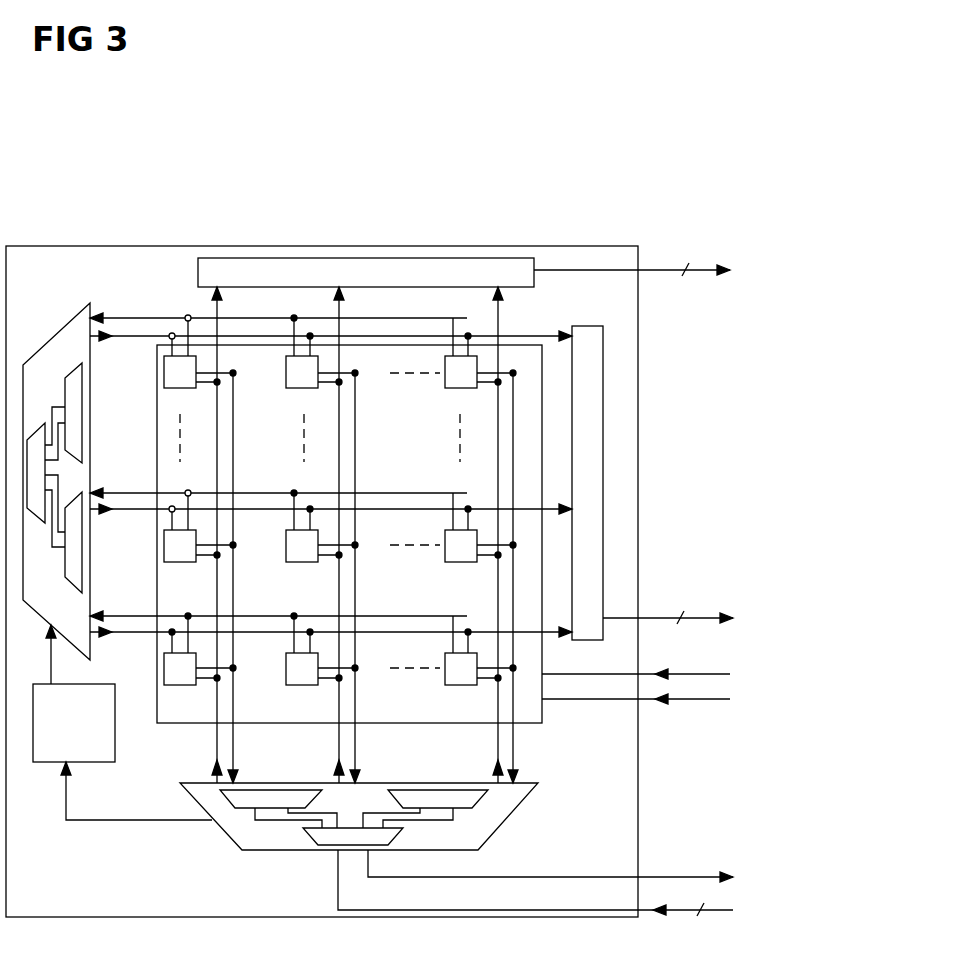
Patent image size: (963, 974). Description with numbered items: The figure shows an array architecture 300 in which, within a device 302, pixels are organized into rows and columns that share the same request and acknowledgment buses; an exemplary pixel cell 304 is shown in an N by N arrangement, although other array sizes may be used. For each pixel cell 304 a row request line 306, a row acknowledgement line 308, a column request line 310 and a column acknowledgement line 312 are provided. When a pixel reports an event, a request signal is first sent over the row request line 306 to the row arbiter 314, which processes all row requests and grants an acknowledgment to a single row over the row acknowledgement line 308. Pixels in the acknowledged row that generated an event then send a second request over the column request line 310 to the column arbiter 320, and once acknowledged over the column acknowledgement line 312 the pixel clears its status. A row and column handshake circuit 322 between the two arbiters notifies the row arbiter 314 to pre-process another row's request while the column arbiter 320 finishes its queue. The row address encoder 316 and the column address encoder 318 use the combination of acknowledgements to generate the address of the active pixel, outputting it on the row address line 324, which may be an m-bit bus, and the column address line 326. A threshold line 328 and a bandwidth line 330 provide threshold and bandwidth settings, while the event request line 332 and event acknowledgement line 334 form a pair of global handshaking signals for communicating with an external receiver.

The array architecture 300 is at (713, 95).
The device 302 is at (573, 246).
The pixel cell 304 is at (455, 388).
The row request line 306 is at (128, 322).
The row acknowledgement line 308 is at (150, 338).
The column request line 310 is at (513, 772).
The column acknowledgement line 312 is at (498, 730).
The row arbiter 314 is at (78, 338).
The row address encoder 316 is at (395, 257).
The column address encoder 318 is at (605, 512).
The column arbiter 320 is at (237, 820).
The row and column handshake circuit 322 is at (68, 748).
The row address line 324 is at (662, 270).
The column address line 326 is at (660, 616).
The threshold line 328 is at (724, 672).
The bandwidth line 330 is at (713, 728).
The event request line 332 is at (687, 860).
The event acknowledgement line 334 is at (702, 910).